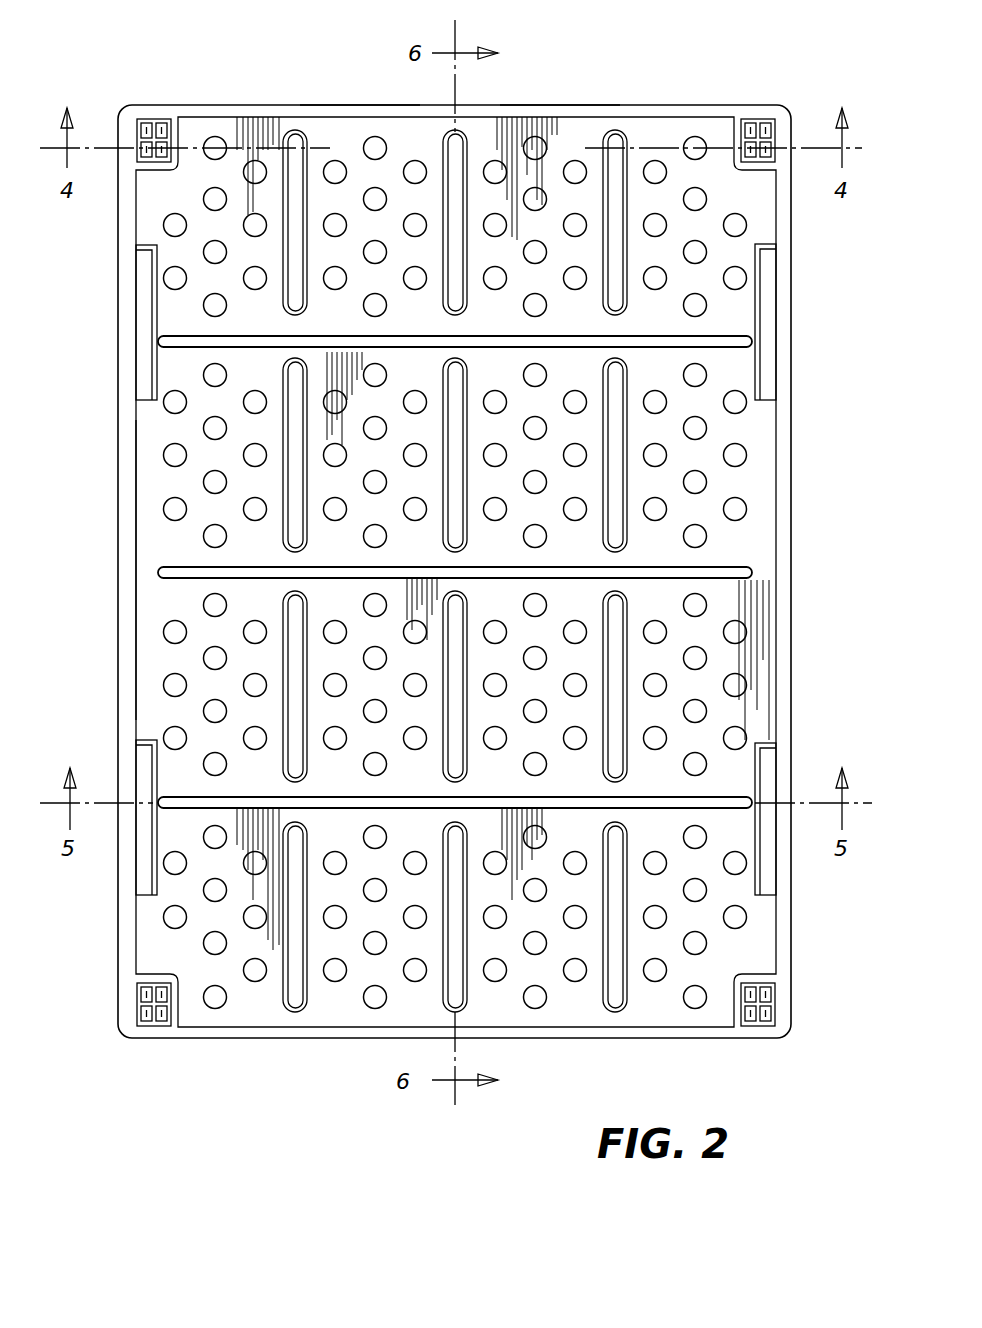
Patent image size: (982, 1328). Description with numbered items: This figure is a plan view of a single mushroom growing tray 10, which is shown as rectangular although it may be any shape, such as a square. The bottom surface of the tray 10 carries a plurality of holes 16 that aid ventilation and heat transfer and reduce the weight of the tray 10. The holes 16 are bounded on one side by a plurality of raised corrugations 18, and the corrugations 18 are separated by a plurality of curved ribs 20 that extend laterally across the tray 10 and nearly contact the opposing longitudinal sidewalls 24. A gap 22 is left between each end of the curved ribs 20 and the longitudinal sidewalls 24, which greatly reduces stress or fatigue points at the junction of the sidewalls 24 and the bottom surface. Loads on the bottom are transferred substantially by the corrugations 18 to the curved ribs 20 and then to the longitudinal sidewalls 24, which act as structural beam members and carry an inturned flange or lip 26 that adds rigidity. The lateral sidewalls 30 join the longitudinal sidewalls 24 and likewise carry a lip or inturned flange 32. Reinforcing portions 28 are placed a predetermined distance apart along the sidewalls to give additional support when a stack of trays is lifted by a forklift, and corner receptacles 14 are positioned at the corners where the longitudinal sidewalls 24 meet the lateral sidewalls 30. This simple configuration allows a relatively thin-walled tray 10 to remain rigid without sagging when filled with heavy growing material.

The tray 10 is at (803, 293).
The corner receptacles 14 is at (176, 133).
The holes 16 is at (578, 289).
The raised corrugations 18 is at (283, 298).
The curved ribs 20 is at (308, 335).
The gap 22 is at (152, 576).
The longitudinal sidewalls 24 is at (137, 610).
The inturned flange or lip 26 is at (118, 645).
The reinforcing portions 28 is at (150, 380).
The lateral sidewalls 30 is at (362, 107).
The lip or inturned flange 32 is at (553, 107).